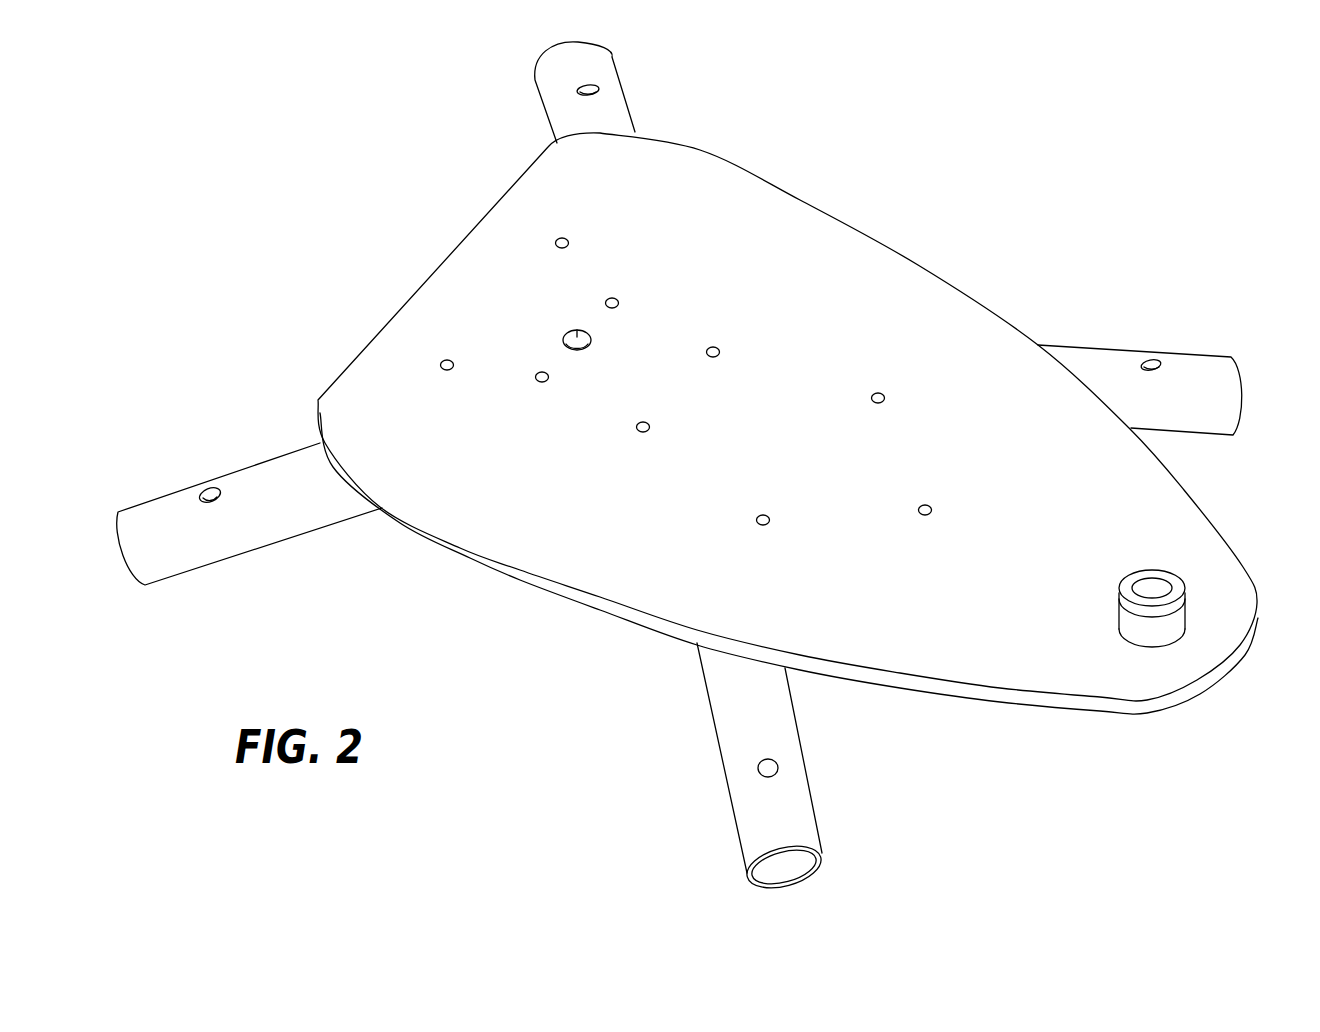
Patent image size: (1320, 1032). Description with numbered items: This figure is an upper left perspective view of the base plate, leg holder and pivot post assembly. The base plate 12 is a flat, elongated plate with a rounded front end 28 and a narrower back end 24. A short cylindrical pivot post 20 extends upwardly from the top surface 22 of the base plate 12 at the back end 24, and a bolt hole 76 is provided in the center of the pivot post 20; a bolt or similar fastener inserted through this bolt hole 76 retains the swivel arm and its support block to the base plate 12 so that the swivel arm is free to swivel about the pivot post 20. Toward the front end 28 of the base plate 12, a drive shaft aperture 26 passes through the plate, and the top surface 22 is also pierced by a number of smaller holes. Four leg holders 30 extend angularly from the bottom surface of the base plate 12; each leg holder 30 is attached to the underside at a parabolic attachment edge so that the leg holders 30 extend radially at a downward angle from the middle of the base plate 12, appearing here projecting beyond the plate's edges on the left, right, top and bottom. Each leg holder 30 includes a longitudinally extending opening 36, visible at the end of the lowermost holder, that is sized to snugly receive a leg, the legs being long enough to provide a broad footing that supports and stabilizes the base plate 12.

The base plate 12 is at (523, 582).
The pivot post 20 is at (1177, 623).
The top surface 22 is at (910, 579).
The back end 24 is at (1016, 733).
The drive shaft aperture 26 is at (573, 332).
The front end 28 is at (727, 133).
The leg holder 30 is at (629, 110).
The longitudinally extending opening 36 is at (790, 870).
The bolt hole 76 is at (1153, 590).